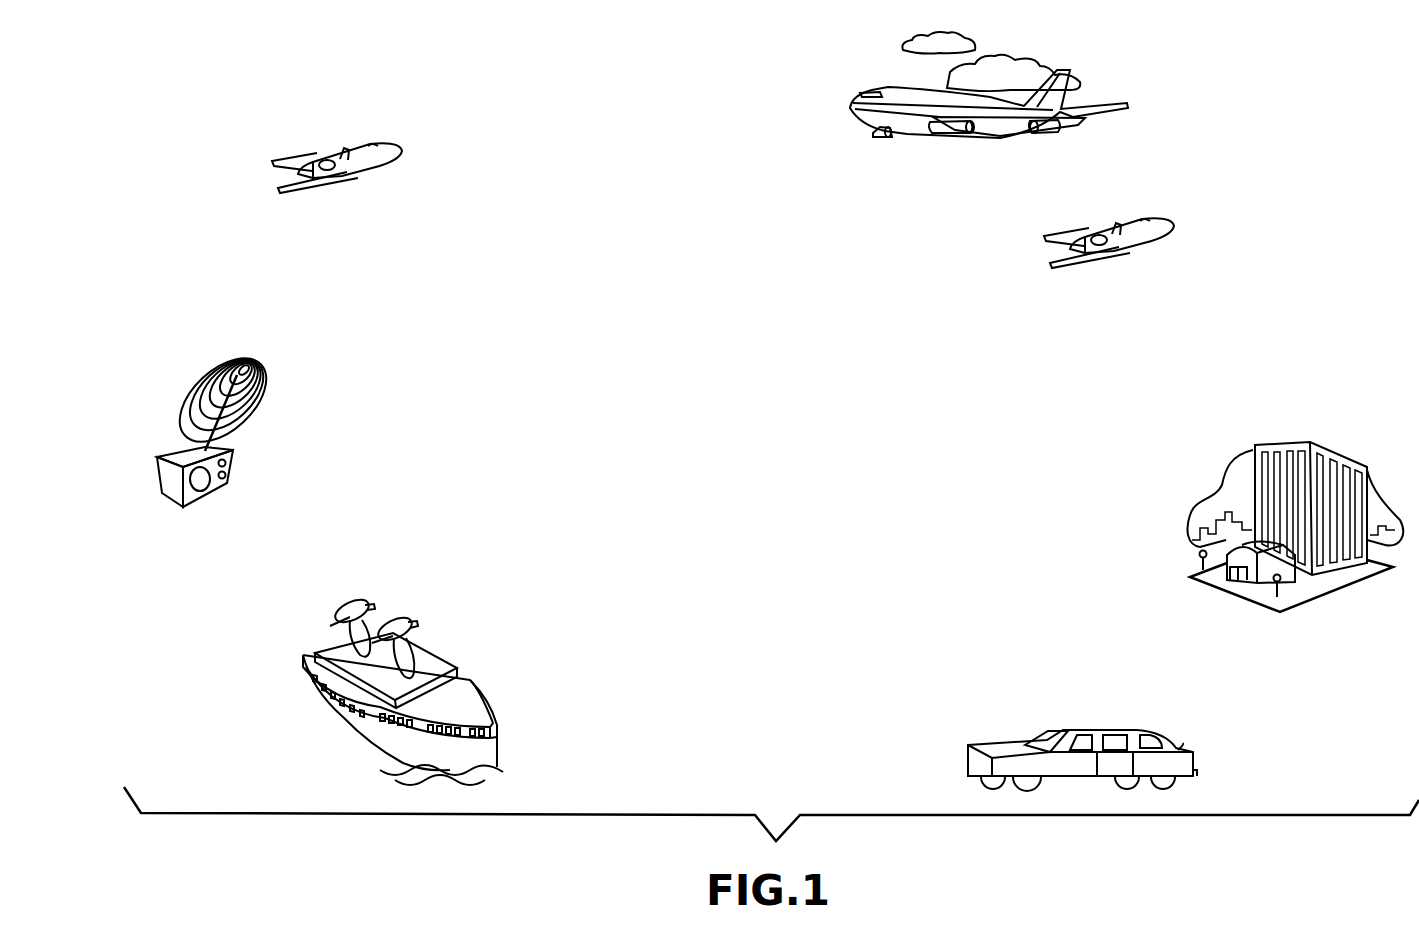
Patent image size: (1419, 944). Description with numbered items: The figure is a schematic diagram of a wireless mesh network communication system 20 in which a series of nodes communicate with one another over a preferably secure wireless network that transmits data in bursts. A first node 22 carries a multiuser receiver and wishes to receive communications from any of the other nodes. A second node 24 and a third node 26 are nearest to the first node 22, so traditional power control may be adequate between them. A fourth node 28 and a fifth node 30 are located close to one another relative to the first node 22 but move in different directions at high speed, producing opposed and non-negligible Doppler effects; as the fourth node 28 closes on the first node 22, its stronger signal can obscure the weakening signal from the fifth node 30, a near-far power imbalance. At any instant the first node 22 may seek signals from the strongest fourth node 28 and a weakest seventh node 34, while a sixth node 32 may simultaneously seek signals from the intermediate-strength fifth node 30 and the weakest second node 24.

The system 20 is at (620, 127).
The first node 22 is at (373, 167).
The second node 24 is at (172, 453).
The third node 26 is at (437, 658).
The fourth node 28 is at (946, 137).
The fifth node 30 is at (1143, 243).
The sixth node 32 is at (1100, 724).
The seventh node 34 is at (1322, 597).